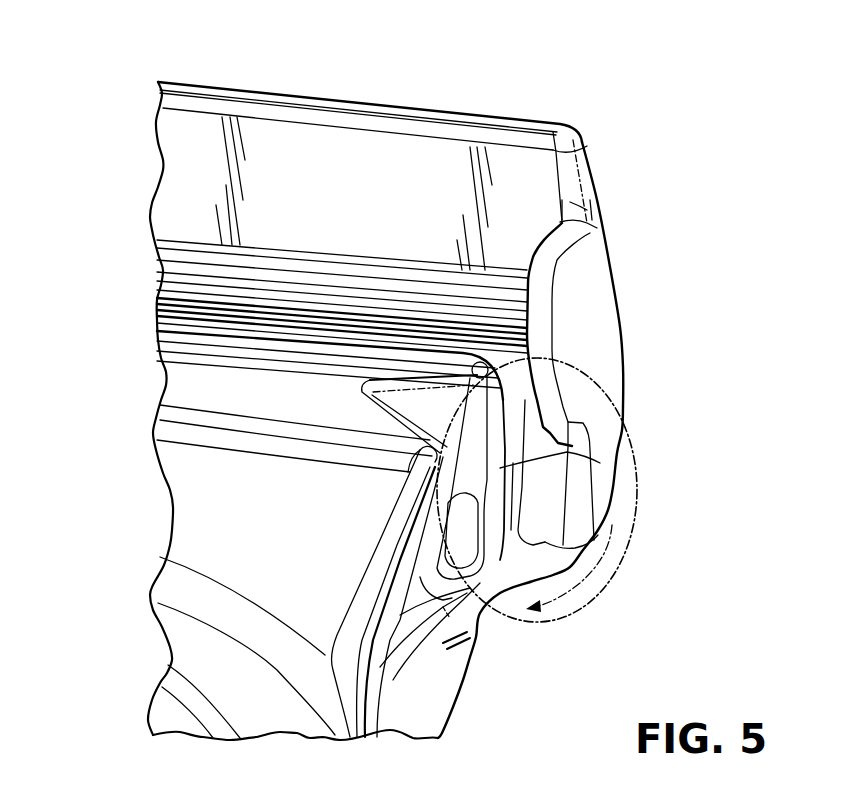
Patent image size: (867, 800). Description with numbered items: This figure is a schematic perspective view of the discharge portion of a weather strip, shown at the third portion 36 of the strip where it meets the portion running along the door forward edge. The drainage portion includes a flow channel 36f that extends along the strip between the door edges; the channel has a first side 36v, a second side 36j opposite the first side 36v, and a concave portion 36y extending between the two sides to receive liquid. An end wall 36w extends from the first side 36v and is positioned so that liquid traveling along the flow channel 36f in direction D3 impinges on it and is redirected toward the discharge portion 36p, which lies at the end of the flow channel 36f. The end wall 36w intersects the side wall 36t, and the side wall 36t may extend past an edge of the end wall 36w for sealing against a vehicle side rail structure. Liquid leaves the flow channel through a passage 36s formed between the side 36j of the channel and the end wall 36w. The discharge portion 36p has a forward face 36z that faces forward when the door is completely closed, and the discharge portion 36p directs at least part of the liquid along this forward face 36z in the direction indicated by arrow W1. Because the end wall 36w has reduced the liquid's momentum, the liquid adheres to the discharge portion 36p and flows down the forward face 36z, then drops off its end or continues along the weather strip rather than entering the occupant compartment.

The third portion of the weather strip 36 is at (256, 80).
The side wall 36t is at (378, 168).
The first side of the flow channel 36v is at (407, 295).
The flow channel 36f is at (205, 306).
The second side of the flow channel 36j is at (348, 352).
The end wall 36w is at (595, 283).
The discharge portion 36p is at (607, 383).
The passage 36s is at (552, 484).
The concave portion 36y is at (523, 456).
The forward face 36z is at (440, 702).
The direction arrow W1 is at (293, 313).
The direction of liquid impinging on end wall D3 is at (157, 307).